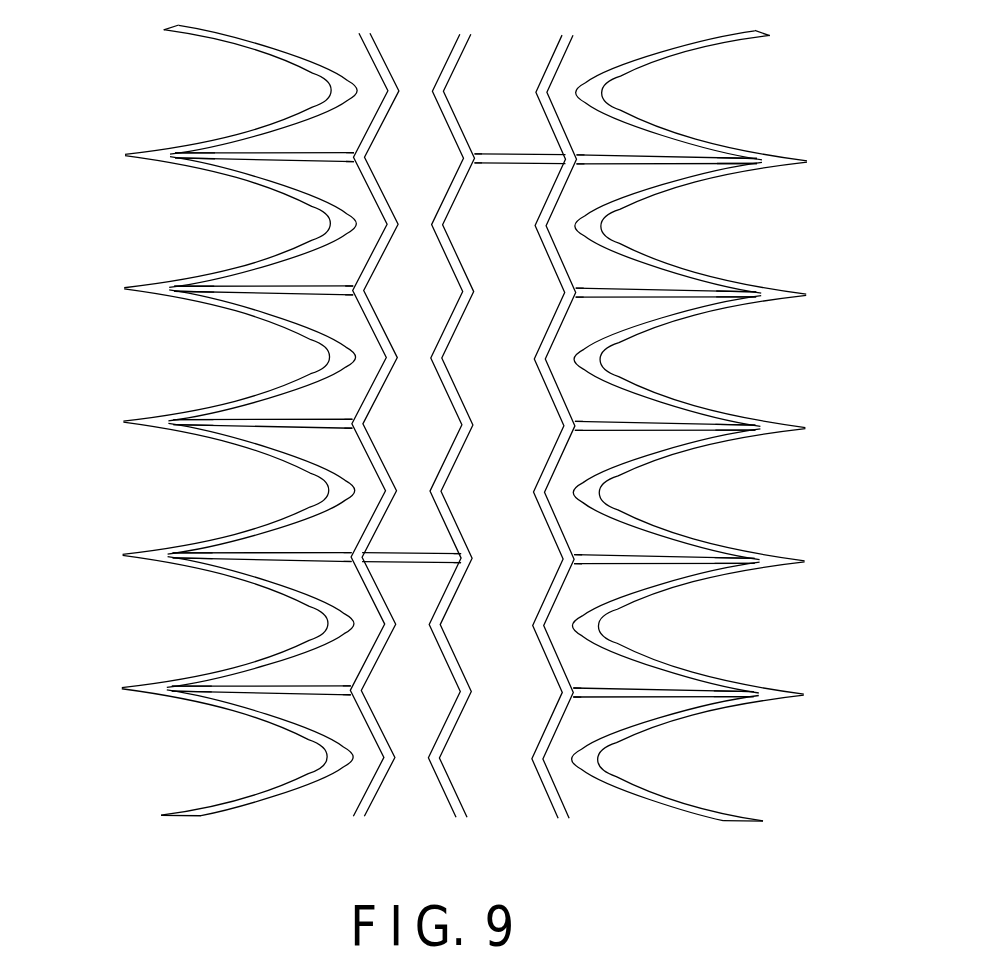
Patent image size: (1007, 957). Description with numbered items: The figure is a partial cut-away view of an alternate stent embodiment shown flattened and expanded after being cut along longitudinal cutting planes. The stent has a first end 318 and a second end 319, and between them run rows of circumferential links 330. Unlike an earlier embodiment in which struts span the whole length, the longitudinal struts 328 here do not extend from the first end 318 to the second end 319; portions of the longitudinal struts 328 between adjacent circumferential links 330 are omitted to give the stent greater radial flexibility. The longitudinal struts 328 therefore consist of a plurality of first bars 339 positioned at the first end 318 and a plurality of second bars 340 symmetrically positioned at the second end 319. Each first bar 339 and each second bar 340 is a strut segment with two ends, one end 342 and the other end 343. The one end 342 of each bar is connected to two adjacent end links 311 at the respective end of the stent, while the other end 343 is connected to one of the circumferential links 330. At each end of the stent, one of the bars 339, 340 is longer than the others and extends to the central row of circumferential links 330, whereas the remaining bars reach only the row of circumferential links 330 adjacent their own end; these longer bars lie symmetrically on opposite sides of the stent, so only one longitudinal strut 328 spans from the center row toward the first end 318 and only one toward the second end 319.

The end links 311 is at (199, 271).
The first end 318 is at (119, 191).
The second end 319 is at (801, 189).
The longitudinal struts 328 is at (300, 171).
The circumferential links 330 is at (389, 66).
The first bars 339 is at (272, 157).
The second bars 340 is at (518, 158).
The one end 342 is at (180, 155).
The other end 343 is at (352, 152).